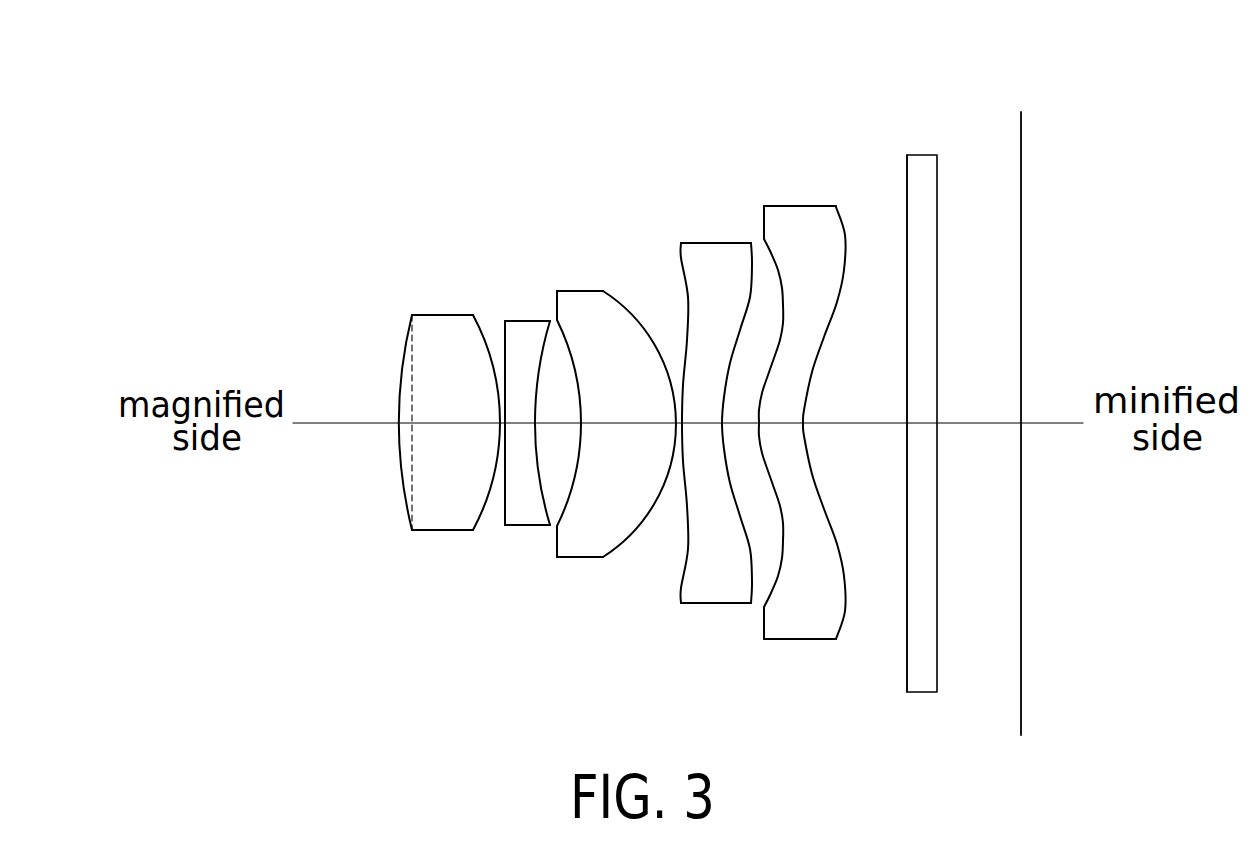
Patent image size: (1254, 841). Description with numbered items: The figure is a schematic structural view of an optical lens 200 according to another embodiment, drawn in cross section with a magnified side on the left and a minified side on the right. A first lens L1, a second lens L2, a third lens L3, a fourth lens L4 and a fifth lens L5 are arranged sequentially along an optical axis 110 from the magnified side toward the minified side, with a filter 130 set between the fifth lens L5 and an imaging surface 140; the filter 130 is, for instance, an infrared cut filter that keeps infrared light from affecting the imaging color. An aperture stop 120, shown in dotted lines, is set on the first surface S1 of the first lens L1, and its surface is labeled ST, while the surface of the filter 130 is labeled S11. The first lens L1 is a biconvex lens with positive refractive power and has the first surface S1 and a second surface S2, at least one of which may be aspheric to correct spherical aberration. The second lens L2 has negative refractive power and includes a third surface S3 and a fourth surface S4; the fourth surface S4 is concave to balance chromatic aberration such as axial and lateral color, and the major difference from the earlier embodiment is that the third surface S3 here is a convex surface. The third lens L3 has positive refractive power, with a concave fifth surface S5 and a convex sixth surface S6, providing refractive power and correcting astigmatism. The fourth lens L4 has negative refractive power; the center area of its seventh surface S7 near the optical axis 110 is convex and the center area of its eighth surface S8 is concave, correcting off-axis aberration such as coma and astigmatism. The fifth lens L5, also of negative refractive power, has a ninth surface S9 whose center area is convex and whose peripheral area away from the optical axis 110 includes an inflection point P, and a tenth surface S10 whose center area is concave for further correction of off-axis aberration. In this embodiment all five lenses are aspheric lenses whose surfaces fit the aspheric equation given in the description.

The optical axis 110 is at (330, 423).
The aperture stop 120 is at (386, 423).
The filter 130 is at (905, 376).
The imaging surface 140 is at (1022, 227).
The optical lens 200 is at (1130, 648).
The first lens L1 is at (400, 456).
The second lens L2 is at (516, 433).
The third lens L3 is at (612, 430).
The fourth lens L4 is at (697, 426).
The fifth lens L5 is at (886, 386).
The inflection point P is at (783, 280).
The surface of the aperture stop ST is at (413, 477).
The first surface S1 is at (398, 443).
The second surface S2 is at (482, 523).
The third surface S3 is at (500, 525).
The fourth surface S4 is at (550, 523).
The fifth surface S5 is at (570, 478).
The sixth surface S6 is at (612, 552).
The seventh surface S7 is at (687, 557).
The eighth surface S8 is at (750, 550).
The ninth surface S9 is at (772, 582).
The tenth surface S10 is at (828, 503).
The surface of the filter S11 is at (907, 537).